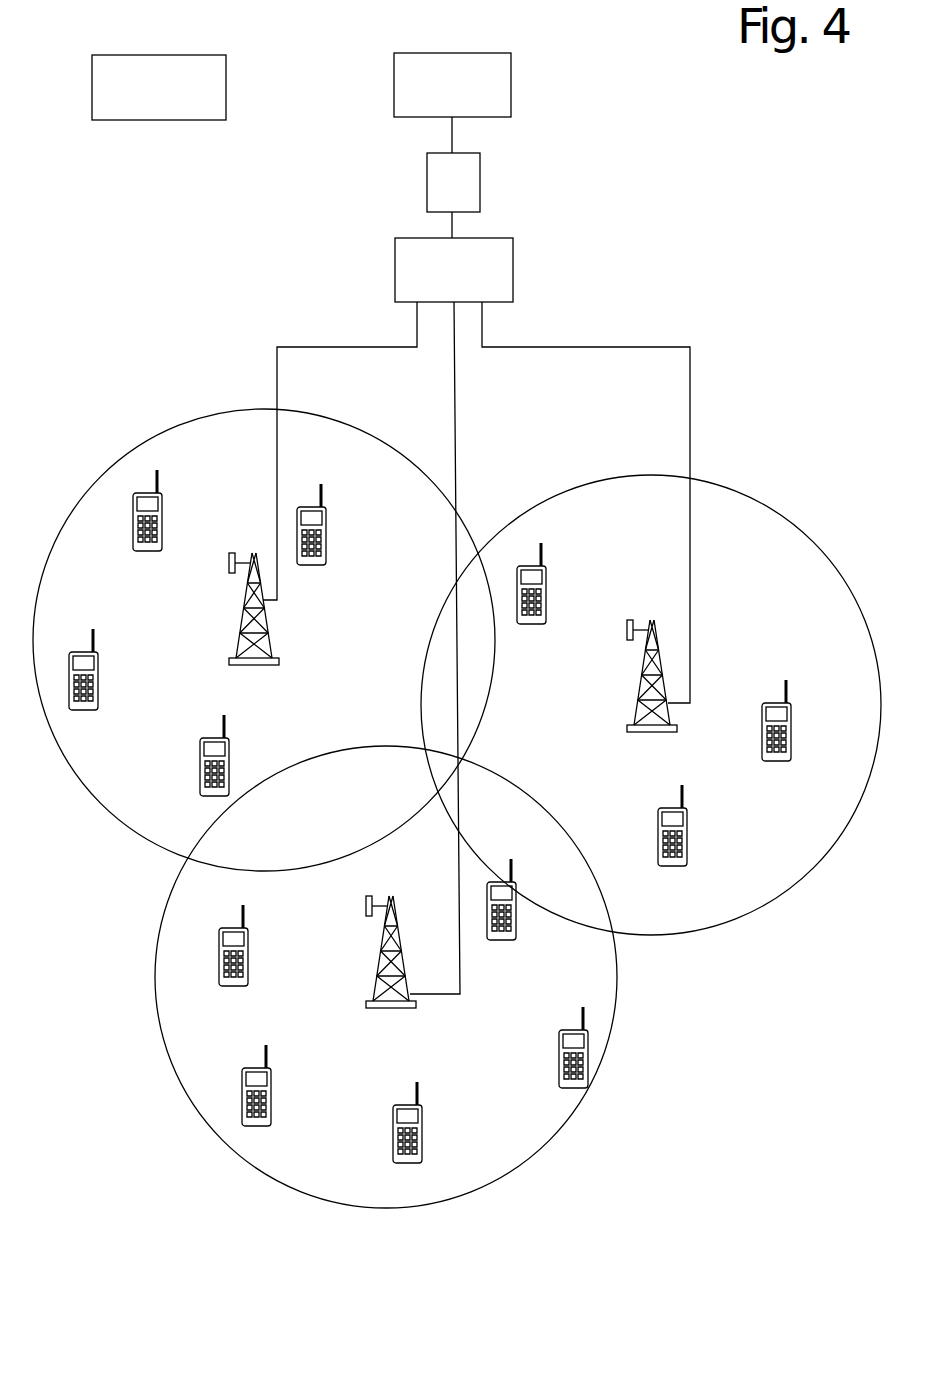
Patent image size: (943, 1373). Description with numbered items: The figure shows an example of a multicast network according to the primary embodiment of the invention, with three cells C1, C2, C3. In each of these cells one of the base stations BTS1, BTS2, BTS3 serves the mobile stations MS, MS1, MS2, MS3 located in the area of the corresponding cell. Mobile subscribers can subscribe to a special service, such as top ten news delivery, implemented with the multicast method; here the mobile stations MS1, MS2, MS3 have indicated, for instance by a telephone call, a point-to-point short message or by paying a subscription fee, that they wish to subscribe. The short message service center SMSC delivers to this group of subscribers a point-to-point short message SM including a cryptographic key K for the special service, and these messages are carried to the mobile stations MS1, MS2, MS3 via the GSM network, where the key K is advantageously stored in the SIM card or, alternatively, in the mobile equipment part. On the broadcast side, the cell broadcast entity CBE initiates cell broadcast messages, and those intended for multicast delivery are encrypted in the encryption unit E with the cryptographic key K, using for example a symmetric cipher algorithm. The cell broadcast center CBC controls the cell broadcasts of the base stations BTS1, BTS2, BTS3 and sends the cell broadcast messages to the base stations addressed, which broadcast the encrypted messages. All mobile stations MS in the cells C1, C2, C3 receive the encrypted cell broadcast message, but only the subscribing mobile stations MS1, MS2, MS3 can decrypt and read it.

The short message service center SMSC is at (159, 87).
The cell broadcast entity CBE is at (452, 85).
The encryption unit E is at (453, 182).
The cell broadcast center CBC is at (454, 270).
The cryptographic key K is at (413, 191).
The point-to-point short message SM is at (785, 680).
The cell C1 is at (352, 422).
The cell C2 is at (737, 488).
The cell C3 is at (618, 982).
The base station BTS1 is at (268, 617).
The base station BTS2 is at (640, 680).
The base station BTS3 is at (378, 973).
The mobile station MS is at (162, 497).
The mobile station MS1 is at (98, 656).
The mobile station MS2 is at (326, 511).
The mobile station MS3 is at (791, 707).